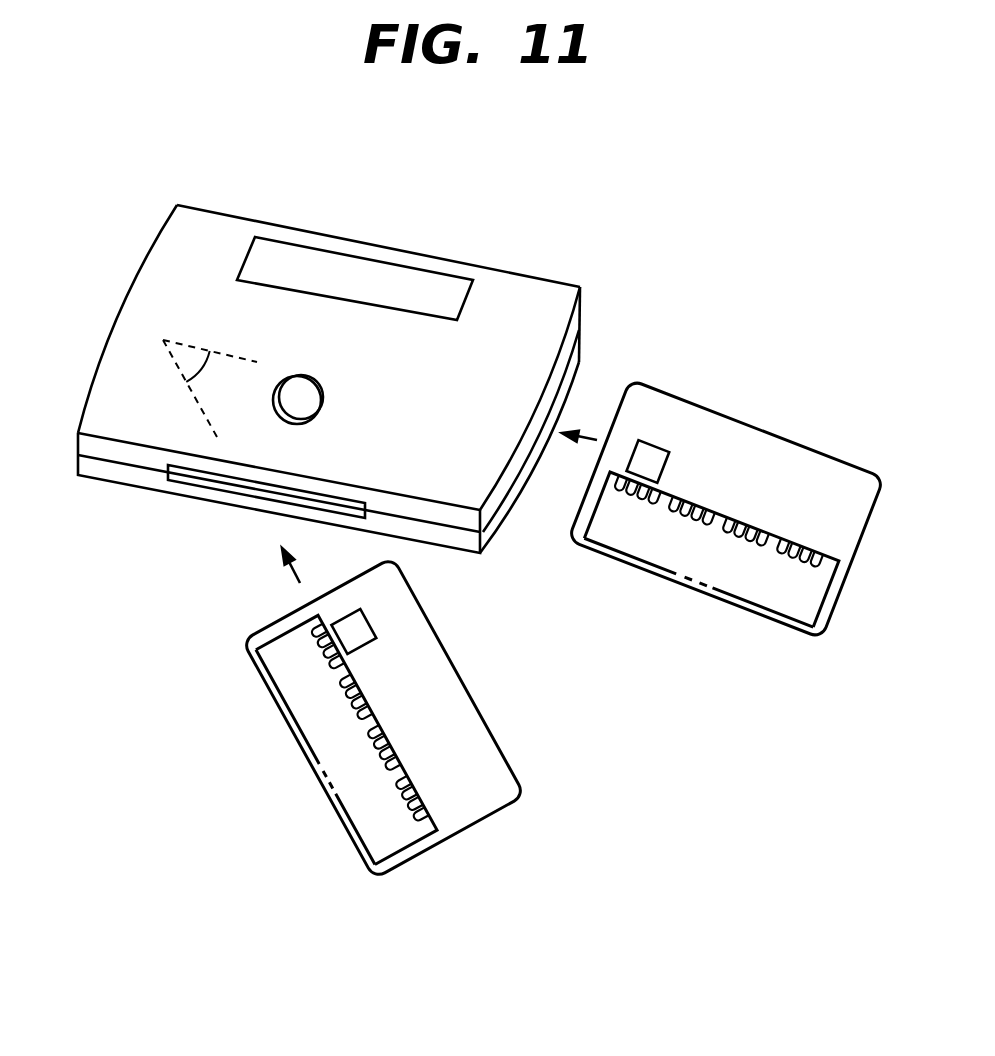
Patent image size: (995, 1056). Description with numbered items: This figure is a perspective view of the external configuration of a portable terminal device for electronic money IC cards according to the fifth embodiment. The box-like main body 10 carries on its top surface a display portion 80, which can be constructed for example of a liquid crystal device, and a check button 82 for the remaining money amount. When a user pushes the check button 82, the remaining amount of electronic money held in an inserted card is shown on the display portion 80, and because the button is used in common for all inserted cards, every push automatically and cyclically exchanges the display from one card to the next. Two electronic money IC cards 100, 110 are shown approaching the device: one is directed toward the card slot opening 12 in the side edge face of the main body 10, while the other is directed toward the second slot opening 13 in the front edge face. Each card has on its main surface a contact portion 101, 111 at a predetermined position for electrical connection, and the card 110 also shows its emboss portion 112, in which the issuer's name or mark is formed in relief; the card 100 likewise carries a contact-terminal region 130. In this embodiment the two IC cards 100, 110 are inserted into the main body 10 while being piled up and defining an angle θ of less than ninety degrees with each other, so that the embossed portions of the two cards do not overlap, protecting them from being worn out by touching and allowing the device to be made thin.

The main body 10 is at (122, 465).
The card slot opening 12 is at (575, 363).
The second slot opening 13 is at (210, 480).
The display portion 80 is at (362, 273).
The check button 82 is at (290, 390).
The electronic money IC card 100 is at (817, 467).
The contact portion 101 is at (647, 455).
The contact terminal window 130 is at (717, 533).
The electronic money IC card 110 is at (477, 753).
The contact portion 111 is at (357, 630).
The emboss portion 112 is at (337, 680).